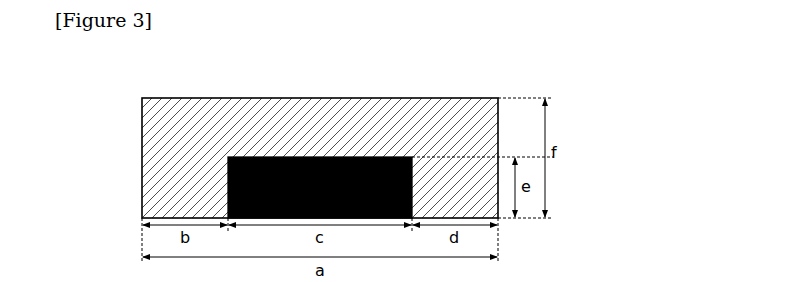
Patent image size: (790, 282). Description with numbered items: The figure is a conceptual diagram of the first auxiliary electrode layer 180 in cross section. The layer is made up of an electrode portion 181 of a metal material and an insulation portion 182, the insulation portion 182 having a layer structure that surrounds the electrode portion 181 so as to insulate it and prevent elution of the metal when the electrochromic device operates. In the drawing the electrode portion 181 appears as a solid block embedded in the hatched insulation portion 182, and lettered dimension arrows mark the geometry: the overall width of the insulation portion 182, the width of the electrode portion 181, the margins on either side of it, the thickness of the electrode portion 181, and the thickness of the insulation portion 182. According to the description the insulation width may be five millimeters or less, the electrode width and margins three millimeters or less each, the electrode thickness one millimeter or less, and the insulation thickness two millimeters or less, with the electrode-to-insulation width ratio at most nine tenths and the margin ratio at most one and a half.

The first auxiliary electrode layer 180 is at (101, 62).
The electrode portion 181 is at (228, 188).
The insulation portion 182 is at (320, 98).